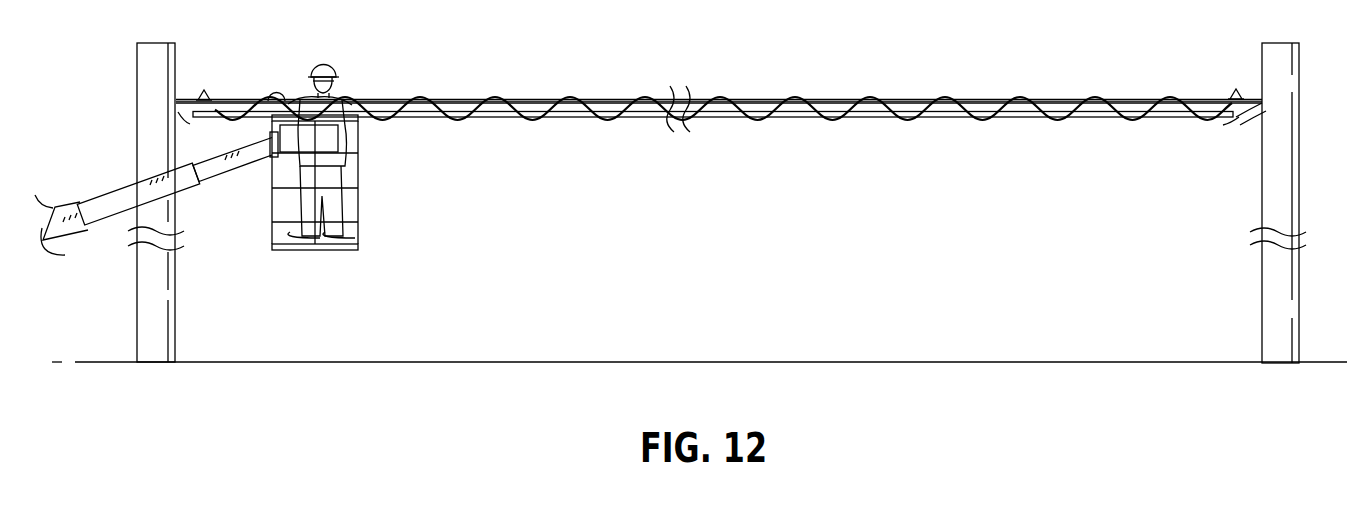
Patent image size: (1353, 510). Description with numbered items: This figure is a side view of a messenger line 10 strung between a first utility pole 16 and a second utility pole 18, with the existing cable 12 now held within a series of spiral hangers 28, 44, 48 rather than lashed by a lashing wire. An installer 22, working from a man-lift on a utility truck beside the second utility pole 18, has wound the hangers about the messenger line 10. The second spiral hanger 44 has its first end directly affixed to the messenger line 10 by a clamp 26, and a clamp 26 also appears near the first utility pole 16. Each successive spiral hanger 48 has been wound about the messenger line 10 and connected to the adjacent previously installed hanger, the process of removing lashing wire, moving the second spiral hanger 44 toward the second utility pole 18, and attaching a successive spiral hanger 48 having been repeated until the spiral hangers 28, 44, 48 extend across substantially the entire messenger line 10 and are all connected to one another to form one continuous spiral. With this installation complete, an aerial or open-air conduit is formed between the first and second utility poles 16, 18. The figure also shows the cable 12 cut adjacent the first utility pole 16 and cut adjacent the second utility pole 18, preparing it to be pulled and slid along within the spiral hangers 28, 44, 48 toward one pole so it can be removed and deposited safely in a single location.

The messenger line 10 is at (457, 98).
The cable 12 is at (430, 118).
The first utility pole 16 is at (1297, 115).
The second utility pole 18 is at (137, 96).
The installer 22 is at (318, 60).
The clamp 26 is at (205, 90).
The spiral hanger 28 is at (1188, 100).
The second spiral hanger 44 is at (220, 100).
The successive spiral hanger 48 is at (378, 97).